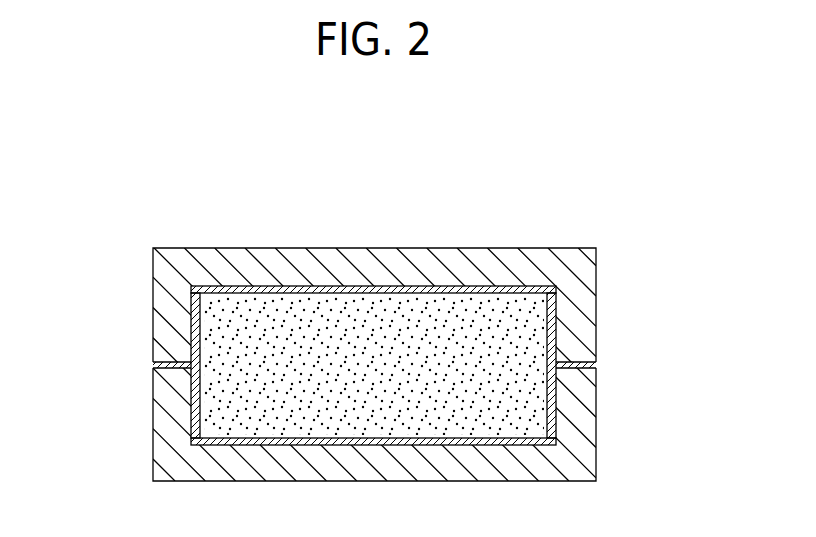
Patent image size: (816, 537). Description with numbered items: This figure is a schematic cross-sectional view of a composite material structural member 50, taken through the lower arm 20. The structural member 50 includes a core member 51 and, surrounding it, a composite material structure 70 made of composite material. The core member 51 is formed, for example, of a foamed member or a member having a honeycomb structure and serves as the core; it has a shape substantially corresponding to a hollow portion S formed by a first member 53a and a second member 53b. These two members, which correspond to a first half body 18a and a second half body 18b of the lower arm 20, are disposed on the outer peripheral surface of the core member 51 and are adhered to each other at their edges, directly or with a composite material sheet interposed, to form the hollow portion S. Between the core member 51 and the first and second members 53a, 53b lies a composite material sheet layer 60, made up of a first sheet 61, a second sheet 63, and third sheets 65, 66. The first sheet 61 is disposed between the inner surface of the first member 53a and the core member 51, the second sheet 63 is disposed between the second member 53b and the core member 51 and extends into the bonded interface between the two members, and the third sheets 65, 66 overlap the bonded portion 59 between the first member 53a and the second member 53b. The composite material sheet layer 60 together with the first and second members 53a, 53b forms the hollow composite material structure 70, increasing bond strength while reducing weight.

The structural member 50 is at (397, 342).
The lower arm 20 is at (397, 342).
The composite material structure 70 is at (434, 321).
The first member 53a is at (434, 360).
The first half body 18a is at (594, 290).
The second member 53b is at (433, 364).
The second half body 18b is at (594, 440).
The composite material sheet layer 60 is at (382, 357).
The first sheet 61 is at (432, 284).
The second sheet 63 is at (438, 446).
The third sheet 65 is at (557, 315).
The third sheet 66 is at (196, 320).
The bonded portion 59 is at (606, 363).
The core member 51 is at (315, 298).
The hollow portion S is at (374, 317).